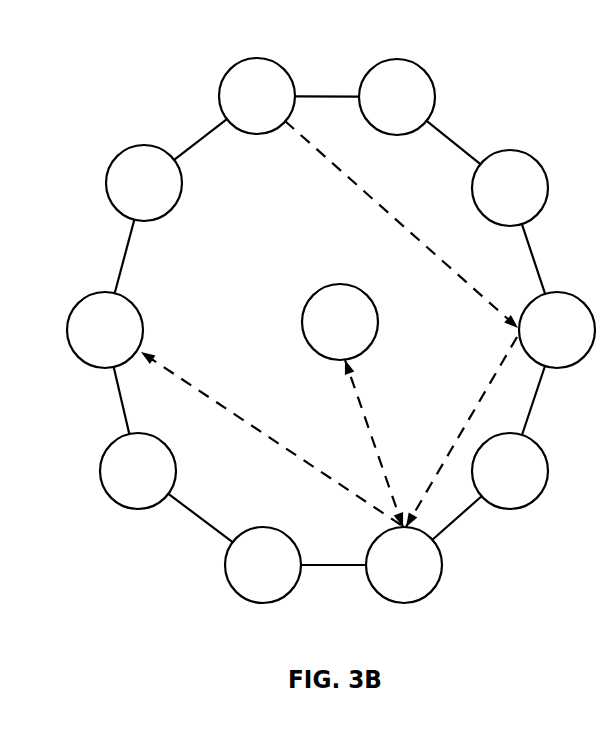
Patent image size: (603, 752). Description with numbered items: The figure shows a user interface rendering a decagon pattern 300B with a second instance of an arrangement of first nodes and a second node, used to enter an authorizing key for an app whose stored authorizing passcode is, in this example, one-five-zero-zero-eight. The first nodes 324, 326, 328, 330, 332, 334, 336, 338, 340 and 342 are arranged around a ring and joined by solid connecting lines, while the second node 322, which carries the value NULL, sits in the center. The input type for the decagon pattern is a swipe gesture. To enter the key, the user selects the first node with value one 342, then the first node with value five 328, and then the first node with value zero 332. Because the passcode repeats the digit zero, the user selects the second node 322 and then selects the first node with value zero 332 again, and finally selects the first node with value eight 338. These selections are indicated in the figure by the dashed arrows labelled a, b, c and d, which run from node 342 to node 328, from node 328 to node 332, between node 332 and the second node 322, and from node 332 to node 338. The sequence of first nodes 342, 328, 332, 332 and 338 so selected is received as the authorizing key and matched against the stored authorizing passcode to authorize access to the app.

The second node 322 is at (319, 348).
The first node 324 is at (376, 123).
The first node 326 is at (489, 214).
The first node with value '5' 328 is at (536, 356).
The first node 330 is at (489, 497).
The first node with value '0' 332 is at (383, 591).
The first node 334 is at (242, 591).
The first node 336 is at (117, 497).
The first node with value '8' 338 is at (84, 356).
The first node 340 is at (123, 209).
The first node with value '1' 342 is at (236, 122).
The decagon pattern 300B is at (180, 80).